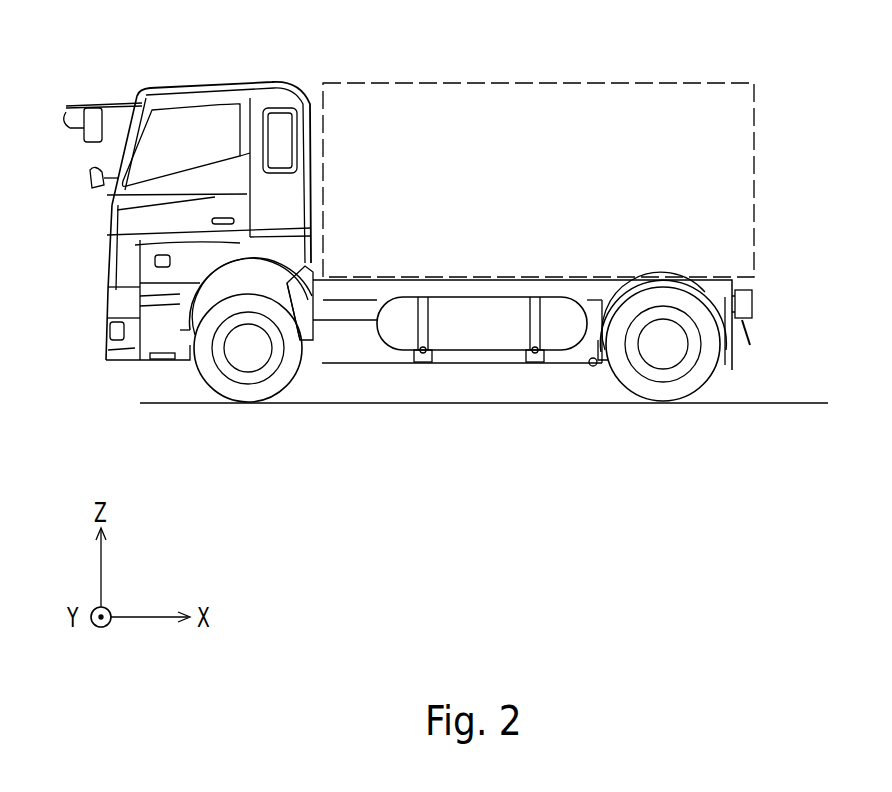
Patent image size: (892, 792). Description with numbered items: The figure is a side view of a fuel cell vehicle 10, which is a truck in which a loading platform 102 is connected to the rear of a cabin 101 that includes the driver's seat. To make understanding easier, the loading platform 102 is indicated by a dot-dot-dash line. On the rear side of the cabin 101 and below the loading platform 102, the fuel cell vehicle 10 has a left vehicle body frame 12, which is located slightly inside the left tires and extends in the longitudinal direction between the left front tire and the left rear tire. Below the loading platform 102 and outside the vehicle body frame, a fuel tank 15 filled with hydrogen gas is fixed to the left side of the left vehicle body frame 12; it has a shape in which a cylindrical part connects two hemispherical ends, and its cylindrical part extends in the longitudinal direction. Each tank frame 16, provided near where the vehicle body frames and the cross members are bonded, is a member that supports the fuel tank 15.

The fuel cell vehicle 10 is at (62, 32).
The cabin 101 is at (215, 83).
The loading platform 102 is at (480, 83).
The left vehicle body frame 12 is at (323, 425).
The fuel tank 15 is at (441, 415).
The tank frame 16 is at (393, 435).